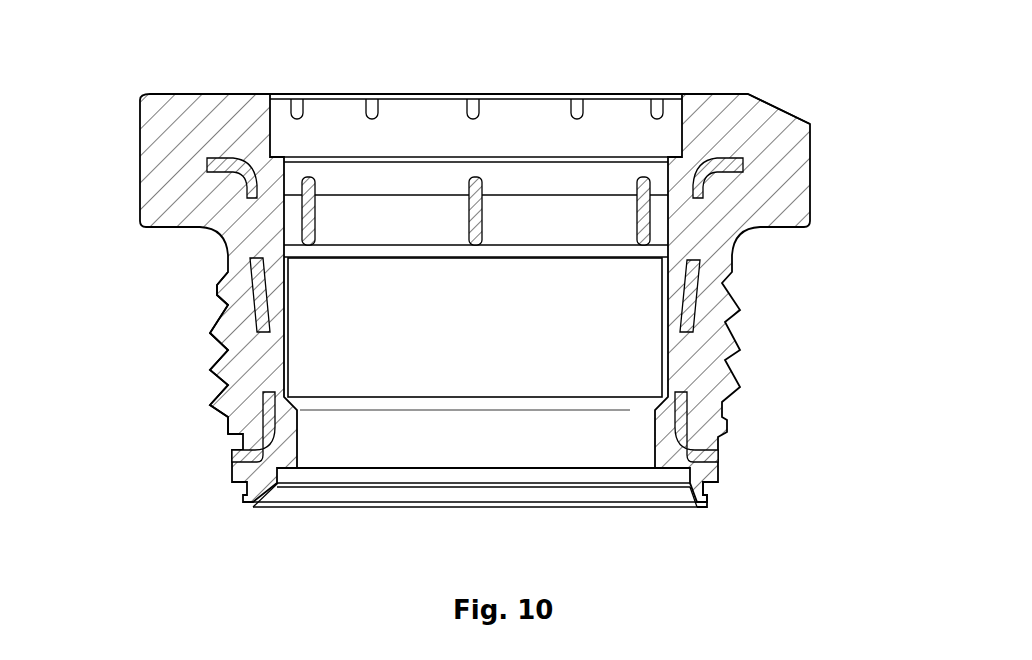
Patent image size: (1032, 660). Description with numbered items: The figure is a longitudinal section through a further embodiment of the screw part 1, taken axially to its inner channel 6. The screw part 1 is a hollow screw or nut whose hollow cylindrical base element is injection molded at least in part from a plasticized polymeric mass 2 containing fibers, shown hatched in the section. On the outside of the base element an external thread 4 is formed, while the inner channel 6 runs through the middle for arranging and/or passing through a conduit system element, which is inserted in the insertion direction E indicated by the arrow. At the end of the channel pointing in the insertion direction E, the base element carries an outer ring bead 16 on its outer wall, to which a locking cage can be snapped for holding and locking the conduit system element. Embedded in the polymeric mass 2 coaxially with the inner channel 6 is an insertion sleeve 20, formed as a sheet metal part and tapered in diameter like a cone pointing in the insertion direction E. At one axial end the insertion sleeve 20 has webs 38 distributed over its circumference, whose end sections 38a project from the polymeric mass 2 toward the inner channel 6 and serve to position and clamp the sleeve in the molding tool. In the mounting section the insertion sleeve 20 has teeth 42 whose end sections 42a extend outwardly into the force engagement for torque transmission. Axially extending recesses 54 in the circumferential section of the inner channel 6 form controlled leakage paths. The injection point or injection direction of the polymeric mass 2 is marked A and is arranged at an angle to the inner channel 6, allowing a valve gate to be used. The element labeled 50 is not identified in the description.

The screw part 1 is at (121, 95).
The plasticized polymeric mass 2 is at (781, 153).
The external thread 4 is at (213, 333).
The inner channel 6 is at (501, 327).
The outer ring bead 16 is at (697, 507).
The insertion sleeve 20 is at (698, 292).
The webs 38 is at (683, 505).
The end sections of the webs 38a is at (720, 453).
The teeth 42 is at (224, 165).
The end section of the teeth 42a is at (750, 137).
The snap bracket 50 is at (710, 167).
The recesses 54 is at (472, 97).
The injection point or injection direction A is at (779, 114).
The insertion direction E is at (586, 365).